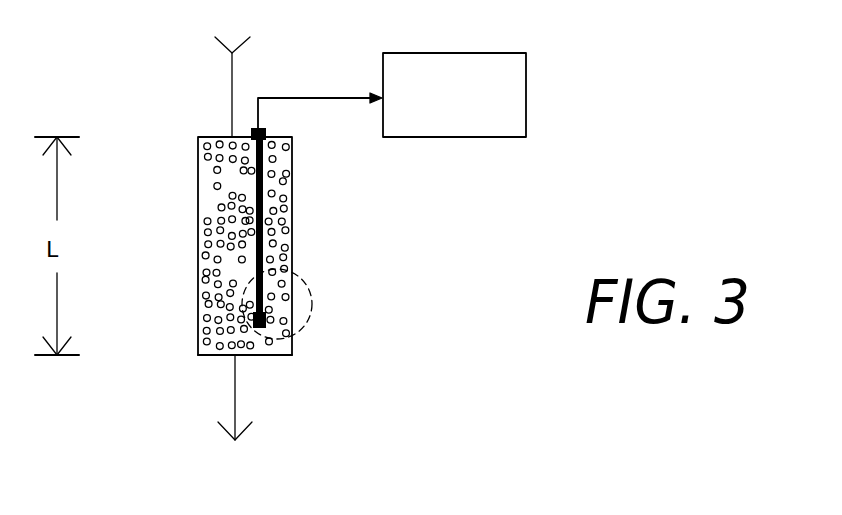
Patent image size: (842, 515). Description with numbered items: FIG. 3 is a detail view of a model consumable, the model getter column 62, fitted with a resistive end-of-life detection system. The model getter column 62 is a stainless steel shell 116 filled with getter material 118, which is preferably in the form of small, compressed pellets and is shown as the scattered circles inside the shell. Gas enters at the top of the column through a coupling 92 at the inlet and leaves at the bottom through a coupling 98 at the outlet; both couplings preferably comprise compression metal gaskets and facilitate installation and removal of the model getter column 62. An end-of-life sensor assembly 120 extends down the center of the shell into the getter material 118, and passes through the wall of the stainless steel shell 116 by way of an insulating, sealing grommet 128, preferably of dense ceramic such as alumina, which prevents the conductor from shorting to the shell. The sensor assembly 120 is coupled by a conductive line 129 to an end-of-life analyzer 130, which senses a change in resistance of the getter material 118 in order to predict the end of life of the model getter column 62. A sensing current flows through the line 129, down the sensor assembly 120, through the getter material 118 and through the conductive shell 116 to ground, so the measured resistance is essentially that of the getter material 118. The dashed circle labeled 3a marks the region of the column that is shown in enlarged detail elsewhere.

The coupling 92 is at (250, 32).
The model getter column 62 is at (182, 189).
The getter material 118 is at (240, 334).
The end-of-life (EOL) sensor assembly 120 is at (292, 238).
The insulating, sealing grommet 128 is at (267, 133).
The conductive line 129 is at (305, 98).
The end-of-life (EOL) analyzer 130 is at (437, 137).
The detail region 3a is at (316, 295).
The stainless steel shell 116 is at (292, 350).
The coupling 98 is at (270, 431).